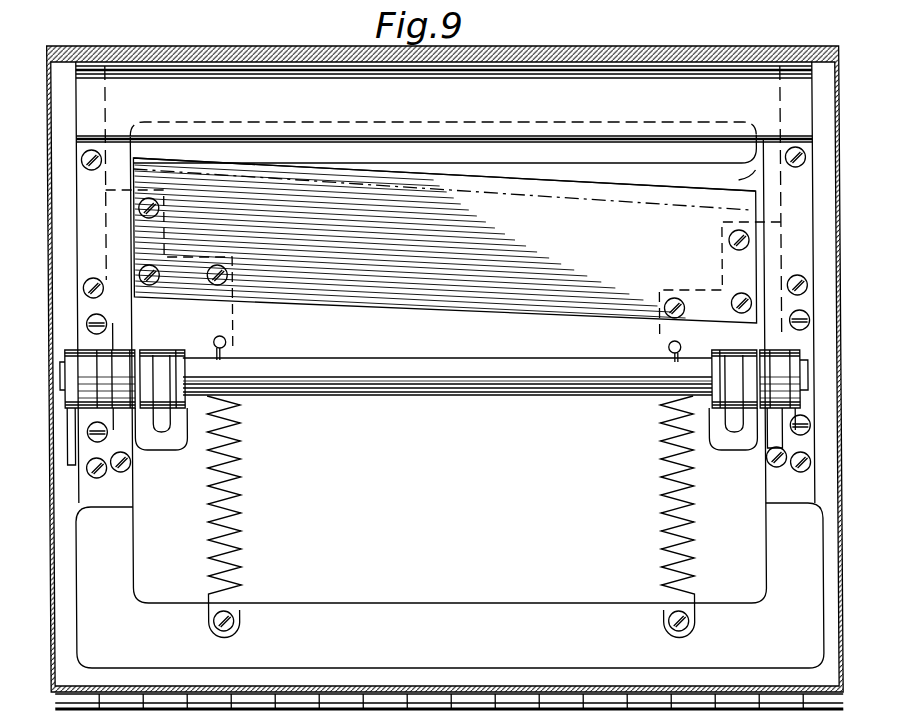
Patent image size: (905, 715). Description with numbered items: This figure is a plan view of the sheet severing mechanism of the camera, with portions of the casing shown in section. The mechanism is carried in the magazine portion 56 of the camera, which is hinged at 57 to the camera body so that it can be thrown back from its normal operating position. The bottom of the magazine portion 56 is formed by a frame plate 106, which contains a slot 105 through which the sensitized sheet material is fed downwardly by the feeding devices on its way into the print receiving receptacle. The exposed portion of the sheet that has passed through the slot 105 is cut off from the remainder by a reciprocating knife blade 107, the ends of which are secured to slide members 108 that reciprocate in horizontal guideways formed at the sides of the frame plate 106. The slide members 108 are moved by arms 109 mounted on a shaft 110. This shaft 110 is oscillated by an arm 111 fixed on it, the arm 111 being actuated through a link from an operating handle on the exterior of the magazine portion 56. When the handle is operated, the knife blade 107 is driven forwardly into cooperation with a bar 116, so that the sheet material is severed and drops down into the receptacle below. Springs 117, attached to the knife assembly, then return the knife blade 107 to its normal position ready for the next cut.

The magazine portion 56 is at (53, 662).
The hinge 57 is at (283, 702).
The slot 105 is at (555, 150).
The frame plate 106 is at (740, 175).
The reciprocating knife blade 107 is at (444, 240).
The slide members 108 is at (236, 313).
The arms 109 is at (163, 425).
The shaft 110 is at (420, 393).
The arm 111 is at (73, 425).
The bar 116 is at (590, 132).
The springs 117 is at (240, 506).